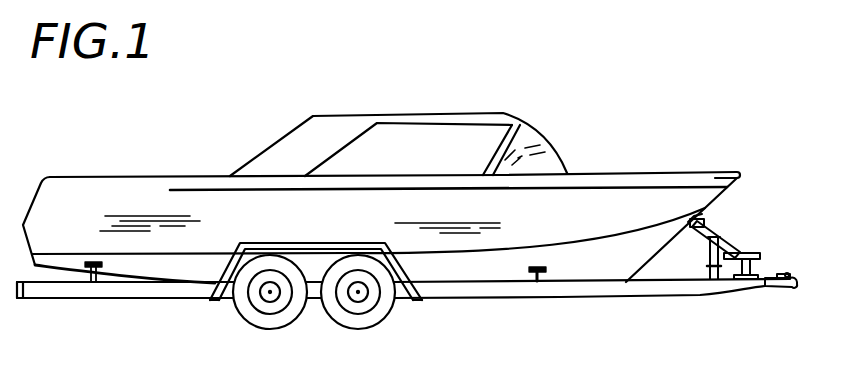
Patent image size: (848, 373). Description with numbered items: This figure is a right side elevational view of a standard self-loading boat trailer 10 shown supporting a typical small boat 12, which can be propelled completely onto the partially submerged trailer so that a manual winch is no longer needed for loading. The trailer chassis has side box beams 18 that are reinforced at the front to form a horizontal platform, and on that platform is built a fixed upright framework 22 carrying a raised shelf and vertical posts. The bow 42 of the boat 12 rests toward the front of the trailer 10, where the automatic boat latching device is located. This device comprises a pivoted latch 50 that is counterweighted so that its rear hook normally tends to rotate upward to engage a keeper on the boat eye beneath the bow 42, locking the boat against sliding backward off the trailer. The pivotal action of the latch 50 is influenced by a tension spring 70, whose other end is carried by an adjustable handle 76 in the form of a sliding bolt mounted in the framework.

The self-loading boat trailer 10 is at (613, 296).
The boat 12 is at (606, 208).
The side box beams 18 is at (586, 287).
The fixed upright framework 22 is at (763, 261).
The bow 42 is at (728, 193).
The pivoted latch 50 is at (706, 222).
The tension spring 70 is at (707, 250).
The adjustable handle 76 is at (708, 265).